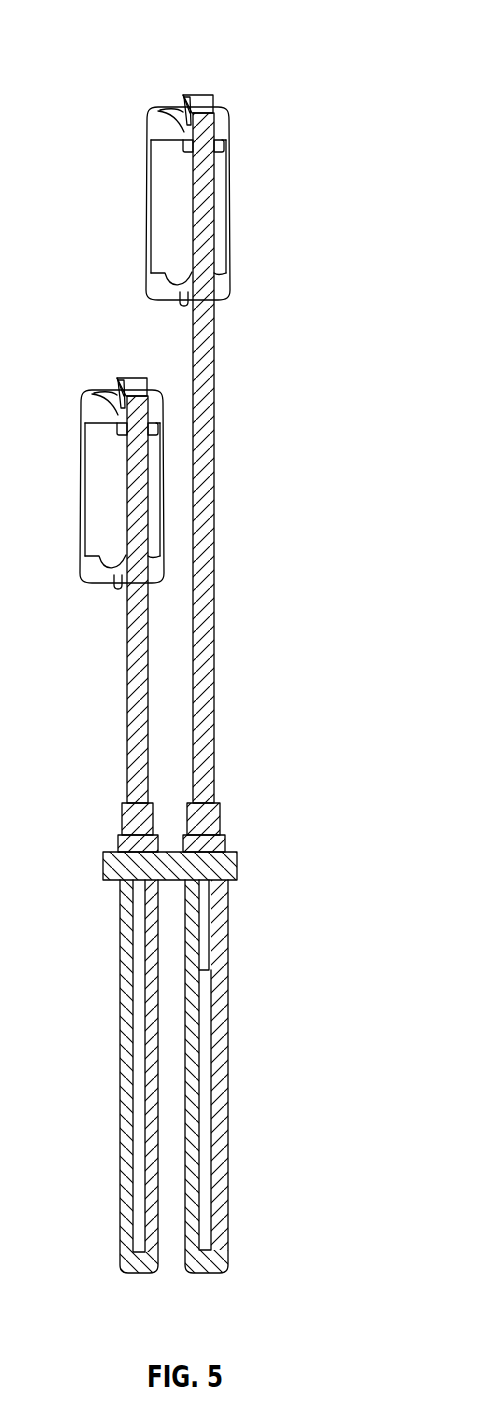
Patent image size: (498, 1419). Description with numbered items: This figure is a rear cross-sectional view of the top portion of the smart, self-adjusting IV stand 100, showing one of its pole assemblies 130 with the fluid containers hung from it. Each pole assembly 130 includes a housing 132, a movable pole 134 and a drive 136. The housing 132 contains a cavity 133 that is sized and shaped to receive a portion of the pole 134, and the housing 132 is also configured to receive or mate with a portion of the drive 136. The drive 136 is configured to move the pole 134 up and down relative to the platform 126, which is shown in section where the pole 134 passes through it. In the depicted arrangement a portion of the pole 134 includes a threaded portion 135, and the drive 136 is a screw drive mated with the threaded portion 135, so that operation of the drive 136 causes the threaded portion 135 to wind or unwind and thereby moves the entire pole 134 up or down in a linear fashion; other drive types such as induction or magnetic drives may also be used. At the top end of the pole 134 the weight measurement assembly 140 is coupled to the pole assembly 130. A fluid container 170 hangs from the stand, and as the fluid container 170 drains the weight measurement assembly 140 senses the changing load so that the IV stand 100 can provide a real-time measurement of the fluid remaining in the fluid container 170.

The self-adjusting IV stand 100 is at (268, 45).
The weight measurement assembly 140 is at (208, 100).
The fluid container 170 is at (147, 192).
The movable pole 134 is at (214, 660).
The drive 136 is at (118, 842).
The pole assembly 130 is at (273, 812).
The platform 126 is at (237, 859).
The threaded portion 135 is at (207, 923).
The housing 132 is at (220, 1130).
The cavity 133 is at (207, 1185).